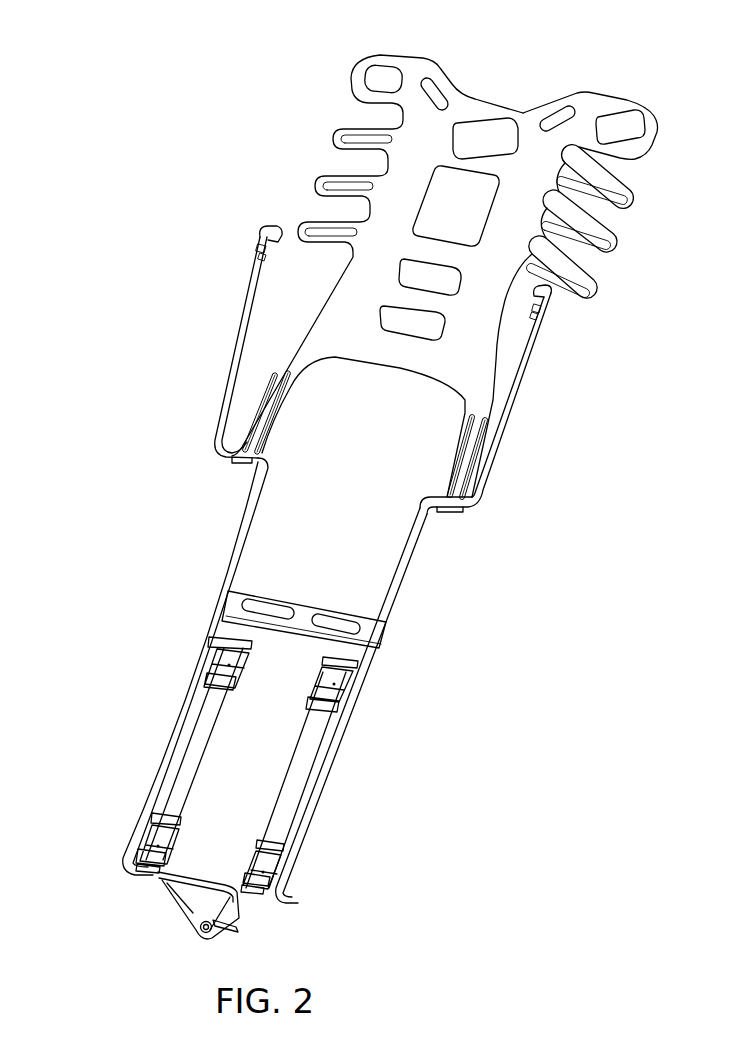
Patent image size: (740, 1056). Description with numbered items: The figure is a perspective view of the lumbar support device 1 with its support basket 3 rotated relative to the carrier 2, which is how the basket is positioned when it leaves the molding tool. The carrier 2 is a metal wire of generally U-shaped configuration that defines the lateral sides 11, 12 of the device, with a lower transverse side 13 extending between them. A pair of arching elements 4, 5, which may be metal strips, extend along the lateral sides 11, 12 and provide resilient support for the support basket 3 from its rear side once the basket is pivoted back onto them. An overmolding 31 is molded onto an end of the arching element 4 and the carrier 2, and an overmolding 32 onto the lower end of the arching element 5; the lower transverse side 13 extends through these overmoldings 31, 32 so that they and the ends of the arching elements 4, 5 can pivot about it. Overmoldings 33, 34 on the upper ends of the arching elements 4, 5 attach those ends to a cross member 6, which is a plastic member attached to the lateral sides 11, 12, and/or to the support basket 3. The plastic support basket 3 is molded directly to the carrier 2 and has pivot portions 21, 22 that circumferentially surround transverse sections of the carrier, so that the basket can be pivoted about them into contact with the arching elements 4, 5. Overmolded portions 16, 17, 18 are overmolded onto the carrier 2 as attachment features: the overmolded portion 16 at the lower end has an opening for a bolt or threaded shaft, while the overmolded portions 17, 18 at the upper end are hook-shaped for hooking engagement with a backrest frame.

The lumbar support device 1 is at (113, 83).
The carrier 2 is at (247, 303).
The support basket 3 is at (443, 72).
The arching element 4 is at (160, 797).
The arching element 5 is at (296, 793).
The cross member 6 is at (300, 602).
The lateral side 11 is at (240, 544).
The lateral side 12 is at (400, 580).
The lower transverse side 13 is at (195, 915).
The overmolded portion 16 is at (236, 927).
The overmolded portion 17 is at (263, 230).
The overmolded portion 18 is at (546, 306).
The pivot portion 21 is at (232, 459).
The pivot portion 22 is at (455, 513).
The overmolding 31 is at (138, 879).
The overmolding 32 is at (262, 905).
The overmolding 33 is at (222, 636).
The overmolding 34 is at (362, 668).